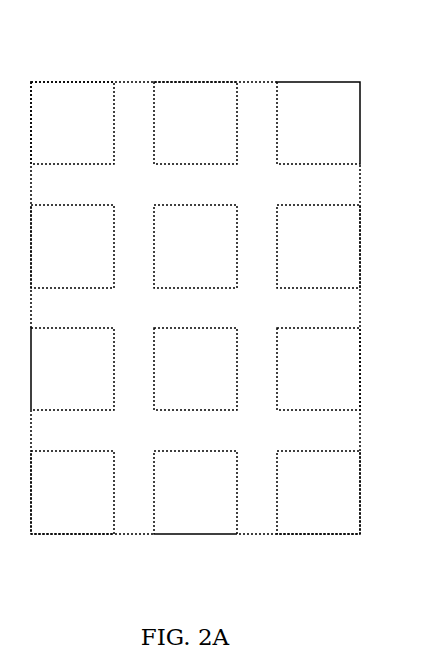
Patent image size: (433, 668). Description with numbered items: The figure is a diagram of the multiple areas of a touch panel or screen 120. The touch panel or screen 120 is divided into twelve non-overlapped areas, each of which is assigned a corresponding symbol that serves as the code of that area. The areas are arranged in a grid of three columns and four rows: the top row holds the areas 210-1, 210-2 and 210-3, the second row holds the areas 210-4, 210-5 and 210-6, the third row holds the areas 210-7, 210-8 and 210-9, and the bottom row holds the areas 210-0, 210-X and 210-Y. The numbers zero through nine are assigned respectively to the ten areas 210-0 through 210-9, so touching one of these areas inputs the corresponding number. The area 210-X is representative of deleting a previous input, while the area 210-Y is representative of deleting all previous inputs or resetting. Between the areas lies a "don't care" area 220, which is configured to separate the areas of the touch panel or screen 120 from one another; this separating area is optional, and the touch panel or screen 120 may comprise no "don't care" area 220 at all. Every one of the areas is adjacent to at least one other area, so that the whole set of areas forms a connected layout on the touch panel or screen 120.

The touch panel or screen 120 is at (372, 31).
The "don't care" area 220 is at (183, 315).
The area 210-1 is at (82, 120).
The area 210-2 is at (206, 120).
The area 210-3 is at (329, 120).
The area 210-4 is at (82, 243).
The area 210-5 is at (206, 243).
The area 210-6 is at (329, 243).
The area 210-7 is at (82, 366).
The area 210-8 is at (206, 366).
The area 210-9 is at (329, 366).
The area 210-0 is at (82, 489).
The area 210-X is at (169, 489).
The area 210-Y is at (295, 489).